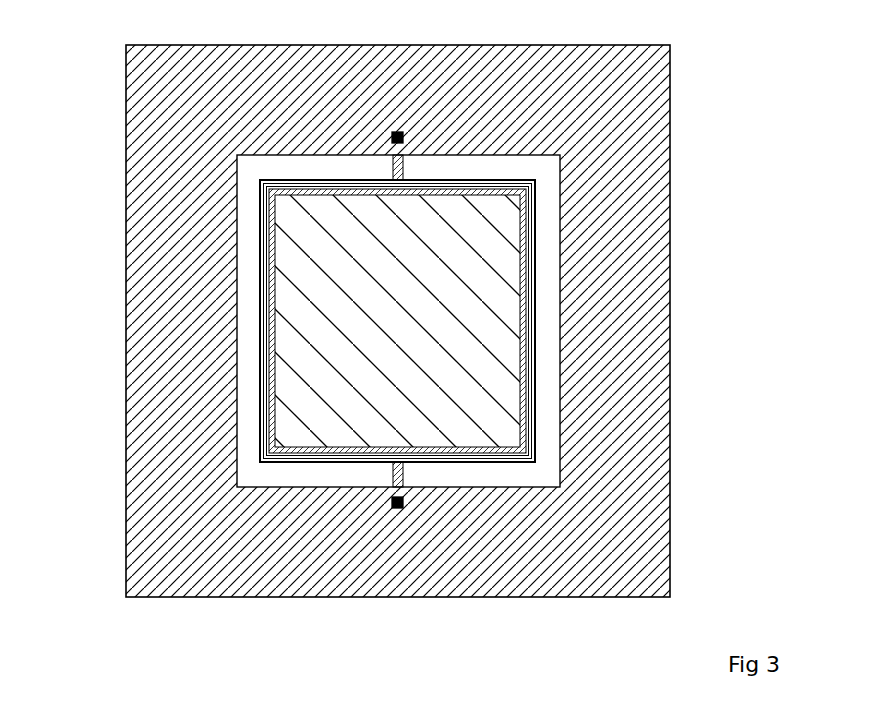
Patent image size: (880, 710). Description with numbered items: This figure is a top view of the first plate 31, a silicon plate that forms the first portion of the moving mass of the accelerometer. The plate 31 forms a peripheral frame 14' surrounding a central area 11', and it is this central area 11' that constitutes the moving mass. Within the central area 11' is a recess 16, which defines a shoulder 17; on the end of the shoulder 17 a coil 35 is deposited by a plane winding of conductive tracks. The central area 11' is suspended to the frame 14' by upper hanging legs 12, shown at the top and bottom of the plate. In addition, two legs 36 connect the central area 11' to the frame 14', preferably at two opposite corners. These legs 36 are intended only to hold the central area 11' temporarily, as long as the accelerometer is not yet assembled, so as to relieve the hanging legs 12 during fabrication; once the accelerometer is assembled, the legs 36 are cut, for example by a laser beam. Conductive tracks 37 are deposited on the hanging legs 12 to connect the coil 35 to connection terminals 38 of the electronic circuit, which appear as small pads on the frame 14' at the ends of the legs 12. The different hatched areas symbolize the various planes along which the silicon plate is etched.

The first plate 31 is at (127, 267).
The frame 14' is at (436, 321).
The coil 35 is at (512, 152).
The legs 36 is at (552, 173).
The central area 11' is at (502, 331).
The conductive tracks 37 is at (403, 147).
The shoulder 17 is at (270, 330).
The recess 16 is at (408, 323).
The upper hanging legs 12 is at (393, 170).
The connection terminals 38 is at (397, 132).